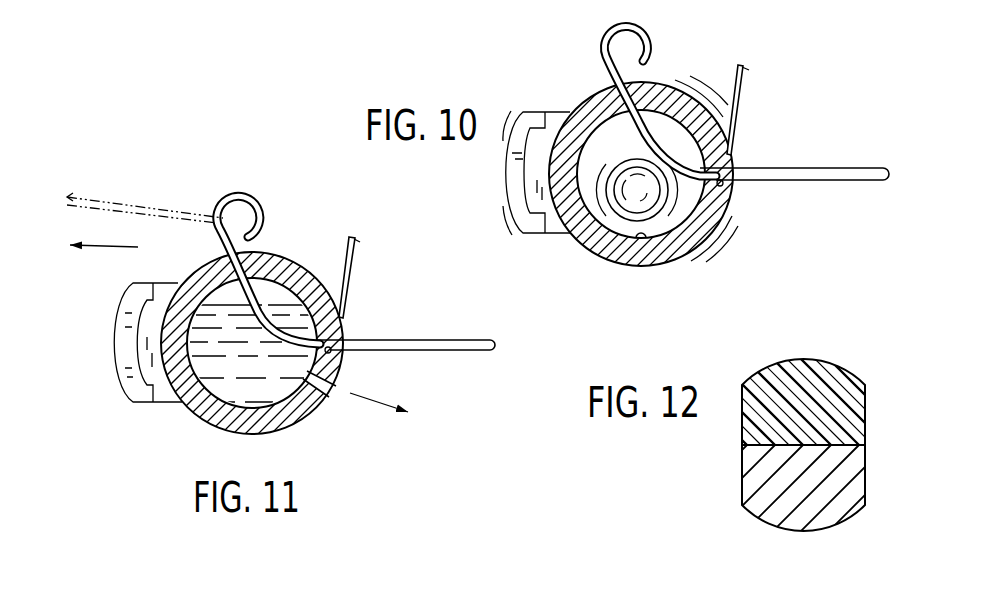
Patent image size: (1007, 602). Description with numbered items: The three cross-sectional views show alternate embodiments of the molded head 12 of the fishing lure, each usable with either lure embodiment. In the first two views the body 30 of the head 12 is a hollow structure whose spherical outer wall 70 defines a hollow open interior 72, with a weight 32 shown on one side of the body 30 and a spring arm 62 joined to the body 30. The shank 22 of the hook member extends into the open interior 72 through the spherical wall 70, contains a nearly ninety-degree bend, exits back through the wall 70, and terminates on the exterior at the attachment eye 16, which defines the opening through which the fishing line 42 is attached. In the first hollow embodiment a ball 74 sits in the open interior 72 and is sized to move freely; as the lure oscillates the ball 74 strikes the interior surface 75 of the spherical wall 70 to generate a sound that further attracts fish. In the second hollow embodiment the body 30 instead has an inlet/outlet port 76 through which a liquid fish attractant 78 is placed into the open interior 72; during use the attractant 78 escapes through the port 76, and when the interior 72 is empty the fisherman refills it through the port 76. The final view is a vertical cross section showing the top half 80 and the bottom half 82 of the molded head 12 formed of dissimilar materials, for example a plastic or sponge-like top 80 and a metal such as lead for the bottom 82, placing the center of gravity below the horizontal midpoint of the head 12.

In FIG. 10, the molded head 12 is at (699, 61).
In FIG. 11, the molded head 12 is at (117, 405).
In FIG. 12, the molded head 12 is at (722, 430).
In FIG. 10, the attachment eye 16 is at (621, 26).
In FIG. 11, the attachment eye 16 is at (235, 193).
In FIG. 10, the shank 22 is at (868, 168).
In FIG. 11, the shank 22 is at (452, 339).
In FIG. 10, the body 30 is at (577, 236).
In FIG. 11, the body 30 is at (213, 428).
In FIG. 10, the weight 32 is at (522, 127).
In FIG. 11, the weight 32 is at (117, 316).
In FIG. 11, the fishing line 42 is at (110, 193).
In FIG. 10, the spring arm 62 is at (748, 73).
In FIG. 11, the spring arm 62 is at (357, 246).
In FIG. 10, the spherical outer wall 70 is at (606, 249).
In FIG. 11, the spherical outer wall 70 is at (290, 267).
In FIG. 10, the open interior 72 is at (698, 200).
In FIG. 11, the open interior 72 is at (266, 290).
In FIG. 10, the ball 74 is at (652, 209).
In FIG. 10, the interior surface 75 is at (638, 240).
In FIG. 11, the inlet/outlet port 76 is at (330, 394).
In FIG. 11, the fish attractant 78 is at (250, 387).
In FIG. 12, the top half 80 is at (807, 368).
In FIG. 12, the bottom half 82 is at (813, 522).